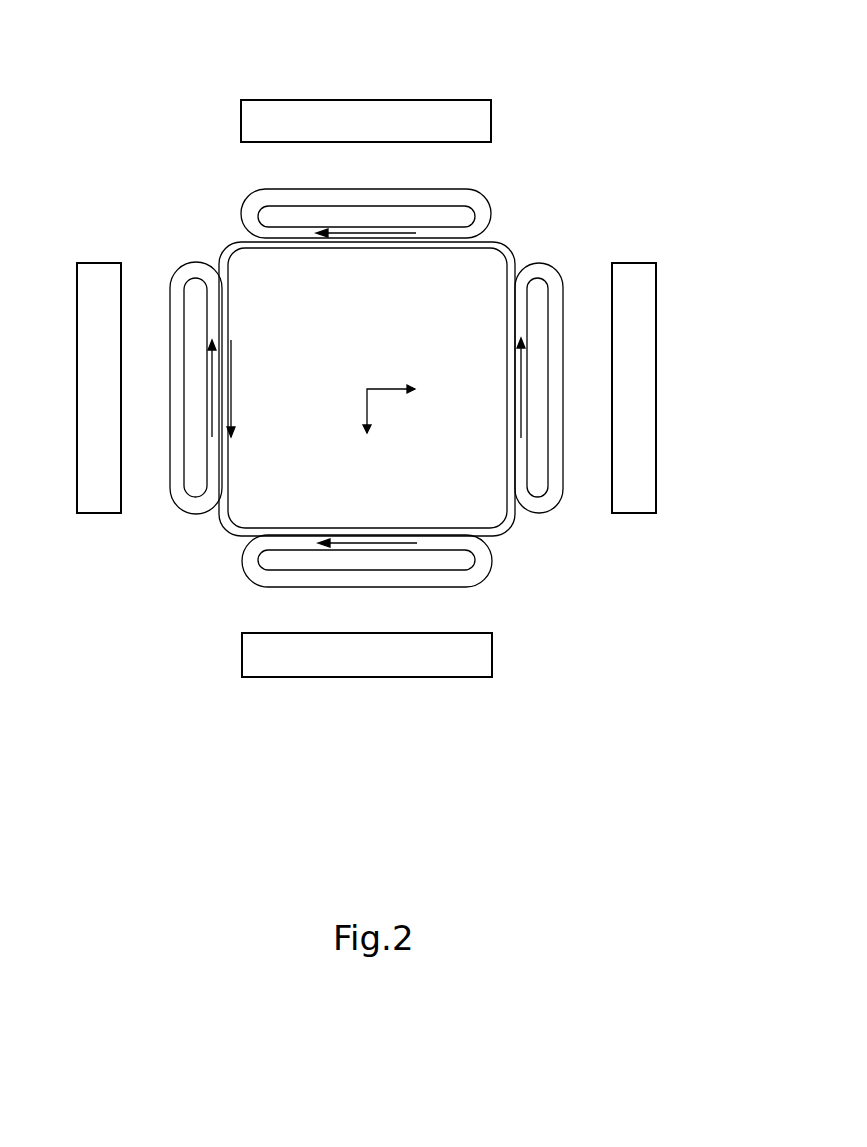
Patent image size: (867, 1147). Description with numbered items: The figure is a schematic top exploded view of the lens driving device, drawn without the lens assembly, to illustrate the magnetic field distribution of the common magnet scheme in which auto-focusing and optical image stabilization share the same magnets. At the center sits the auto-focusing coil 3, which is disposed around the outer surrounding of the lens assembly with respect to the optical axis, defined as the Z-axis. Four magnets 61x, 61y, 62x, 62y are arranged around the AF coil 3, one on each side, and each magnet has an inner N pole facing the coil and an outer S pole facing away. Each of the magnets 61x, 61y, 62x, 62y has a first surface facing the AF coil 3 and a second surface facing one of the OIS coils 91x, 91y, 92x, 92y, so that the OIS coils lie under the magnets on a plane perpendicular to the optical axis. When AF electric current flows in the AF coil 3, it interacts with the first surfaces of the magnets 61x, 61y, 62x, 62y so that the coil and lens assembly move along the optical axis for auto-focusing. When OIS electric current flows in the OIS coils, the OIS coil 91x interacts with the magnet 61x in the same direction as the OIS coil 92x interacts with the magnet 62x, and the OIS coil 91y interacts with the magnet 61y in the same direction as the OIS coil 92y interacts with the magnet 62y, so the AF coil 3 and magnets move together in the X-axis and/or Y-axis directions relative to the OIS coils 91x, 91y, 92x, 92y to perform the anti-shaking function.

The auto-focusing coil 3 is at (498, 531).
The magnet 62y is at (467, 112).
The OIS coil 92y is at (470, 201).
The OIS coil 91y is at (470, 575).
The magnet 61y is at (466, 665).
The magnet 62x is at (90, 272).
The OIS coil 92x is at (195, 272).
The OIS coil 91x is at (538, 272).
The magnet 61x is at (643, 272).